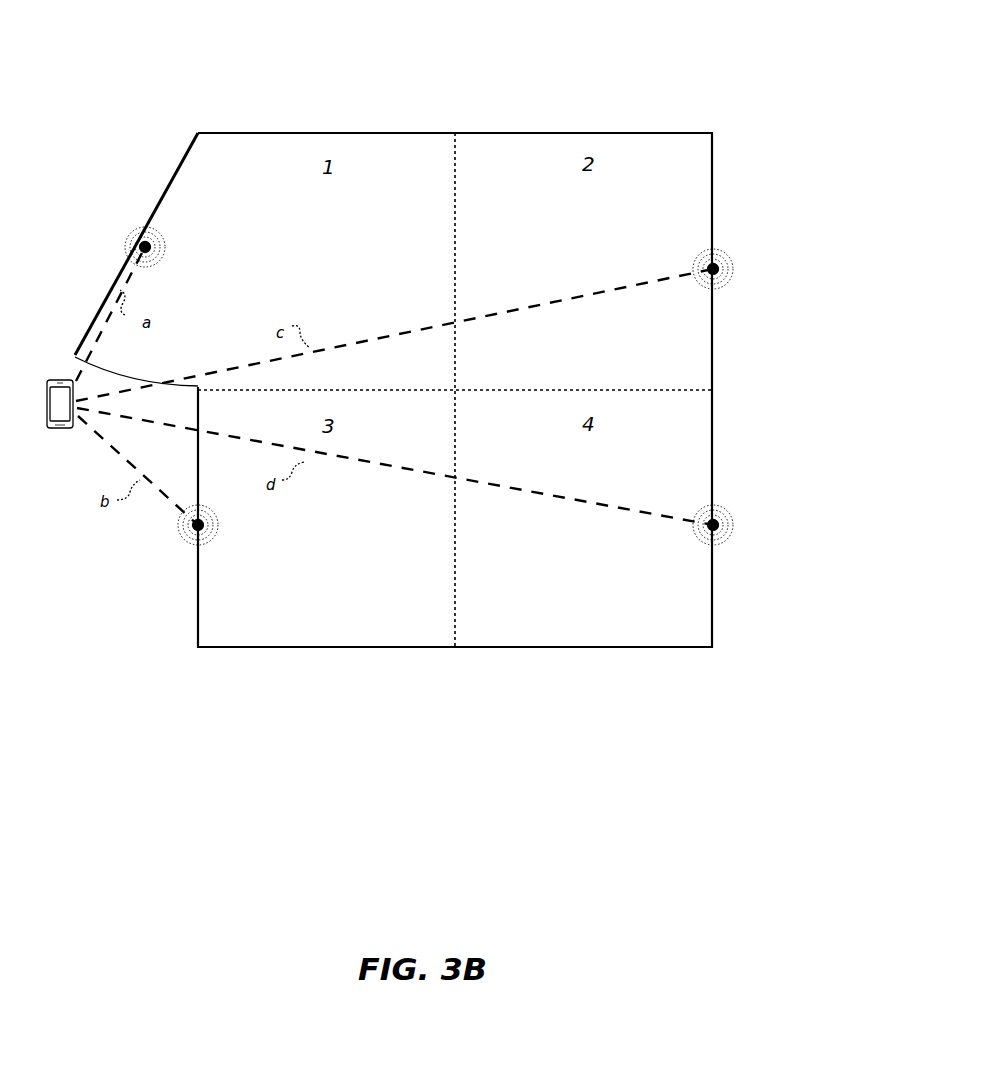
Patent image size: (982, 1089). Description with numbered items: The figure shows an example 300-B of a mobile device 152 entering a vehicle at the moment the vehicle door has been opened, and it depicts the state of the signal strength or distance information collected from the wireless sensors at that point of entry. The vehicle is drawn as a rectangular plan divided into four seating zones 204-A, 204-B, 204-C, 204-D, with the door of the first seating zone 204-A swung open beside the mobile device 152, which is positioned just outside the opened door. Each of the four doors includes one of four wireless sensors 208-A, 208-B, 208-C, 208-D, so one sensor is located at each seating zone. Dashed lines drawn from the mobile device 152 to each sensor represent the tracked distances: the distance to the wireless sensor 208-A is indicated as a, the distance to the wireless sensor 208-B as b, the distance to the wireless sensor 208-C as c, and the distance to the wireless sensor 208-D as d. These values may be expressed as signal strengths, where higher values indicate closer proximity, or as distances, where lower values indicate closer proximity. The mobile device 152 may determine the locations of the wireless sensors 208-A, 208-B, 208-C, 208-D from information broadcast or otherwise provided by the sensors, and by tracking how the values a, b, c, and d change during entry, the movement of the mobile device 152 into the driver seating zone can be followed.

The example 300-B is at (152, 42).
The mobile device 152 is at (60, 430).
The seating zone 204-A is at (305, 132).
The seating zone 204-B is at (593, 132).
The seating zone 204-C is at (303, 648).
The seating zone 204-D is at (594, 648).
The wireless sensor 208-A is at (142, 238).
The wireless sensor 208-B is at (190, 530).
The wireless sensor 208-C is at (720, 275).
The wireless sensor 208-D is at (720, 530).